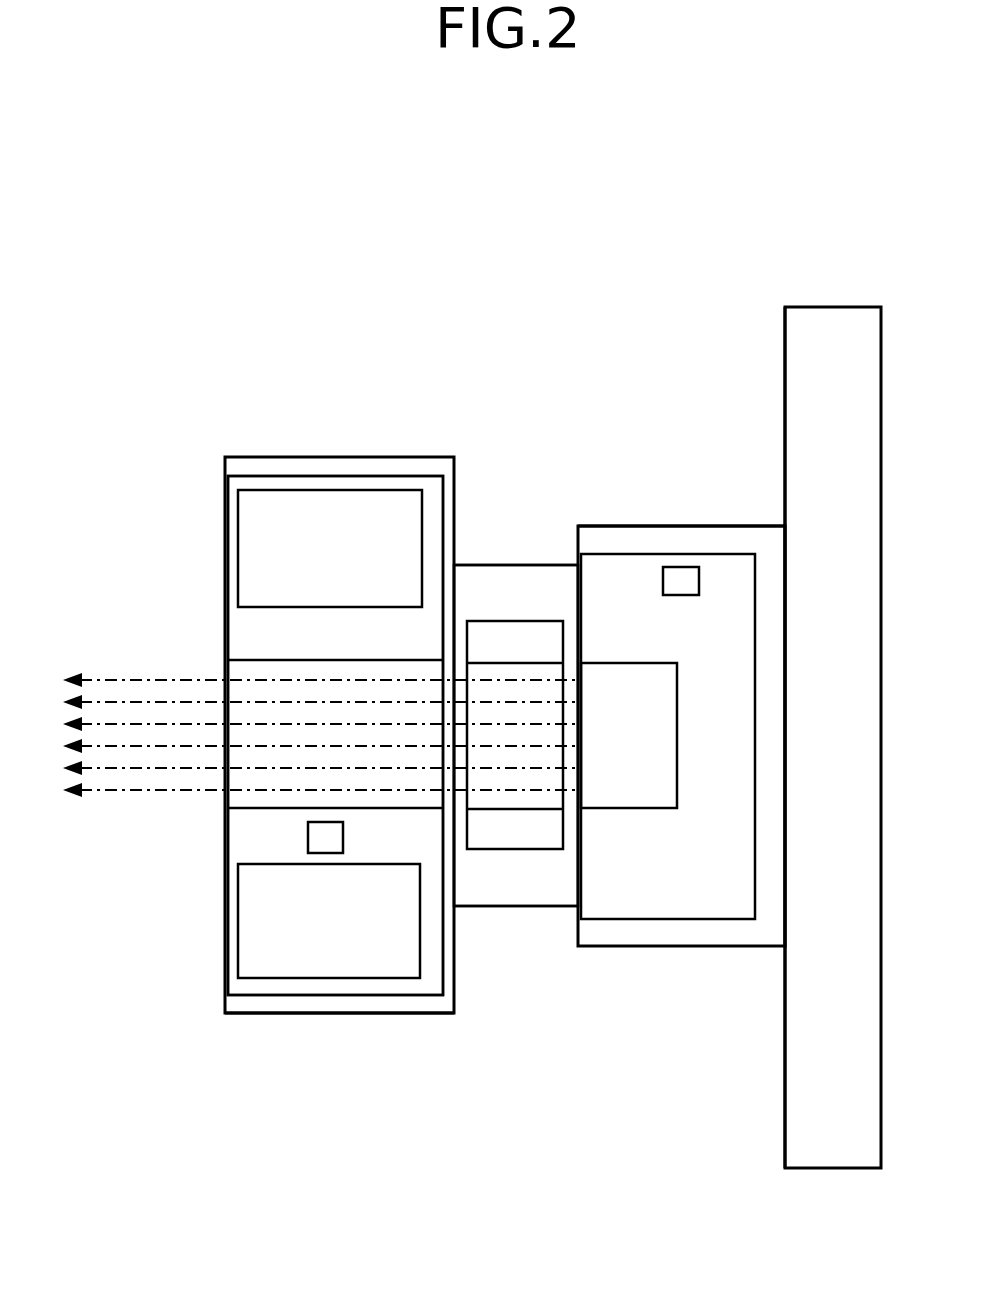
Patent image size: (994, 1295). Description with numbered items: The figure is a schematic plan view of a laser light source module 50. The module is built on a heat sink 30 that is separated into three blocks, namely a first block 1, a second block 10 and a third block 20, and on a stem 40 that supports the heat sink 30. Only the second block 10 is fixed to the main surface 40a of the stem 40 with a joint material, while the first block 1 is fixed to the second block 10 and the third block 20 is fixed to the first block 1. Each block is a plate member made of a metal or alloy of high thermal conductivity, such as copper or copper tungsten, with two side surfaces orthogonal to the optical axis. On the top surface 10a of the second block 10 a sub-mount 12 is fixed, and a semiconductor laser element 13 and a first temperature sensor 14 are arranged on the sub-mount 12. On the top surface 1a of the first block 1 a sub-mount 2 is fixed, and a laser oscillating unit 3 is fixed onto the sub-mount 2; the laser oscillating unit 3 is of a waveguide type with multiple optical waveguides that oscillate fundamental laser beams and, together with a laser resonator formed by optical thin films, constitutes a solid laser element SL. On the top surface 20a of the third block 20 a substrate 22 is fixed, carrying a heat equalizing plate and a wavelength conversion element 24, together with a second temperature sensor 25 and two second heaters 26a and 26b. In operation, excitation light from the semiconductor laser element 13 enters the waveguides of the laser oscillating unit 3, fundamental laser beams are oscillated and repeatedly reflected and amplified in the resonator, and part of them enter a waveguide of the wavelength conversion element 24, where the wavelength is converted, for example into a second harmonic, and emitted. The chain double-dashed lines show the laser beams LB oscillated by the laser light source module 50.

The first block 1 is at (553, 890).
The top surface 1a is at (500, 577).
The sub-mount 2 is at (515, 838).
The laser oscillating unit 3 is at (541, 673).
The second block 10 is at (690, 932).
The top surface 10a is at (636, 535).
The sub-mount 12 is at (625, 905).
The semiconductor laser element 13 is at (625, 800).
The first temperature sensor 14 is at (678, 597).
The third block 20 is at (431, 1003).
The top surface 20a is at (293, 1003).
The substrate 22 is at (255, 622).
The wavelength conversion element 24 is at (248, 677).
The second temperature sensor 25 is at (328, 848).
The second heater 26a is at (268, 945).
The second heater 26b is at (270, 551).
The heat sink 30 is at (224, 487).
The stem 40 is at (840, 305).
The main surface 40a is at (785, 344).
The laser light source module 50 is at (630, 236).
The laser beams LB is at (100, 675).
The solid laser element SL is at (556, 605).